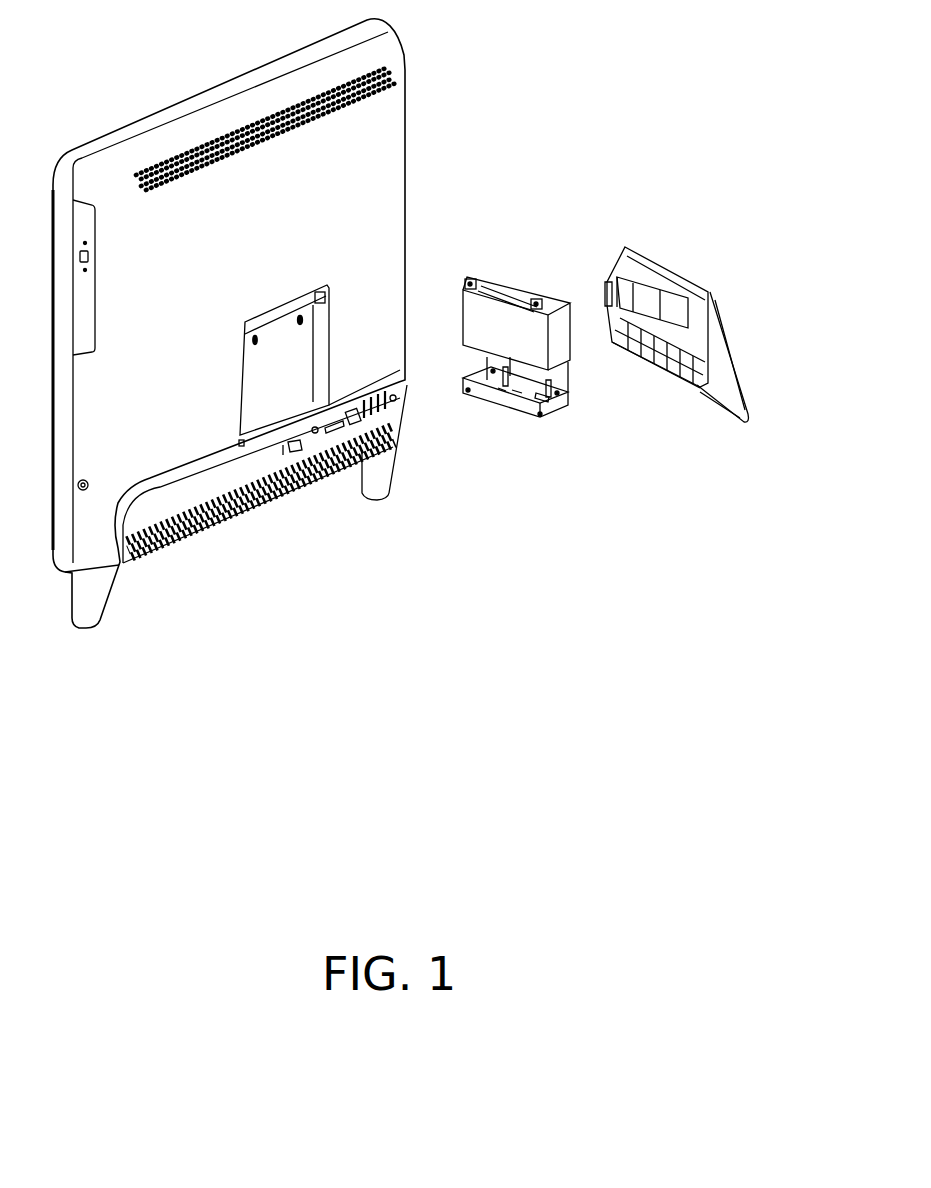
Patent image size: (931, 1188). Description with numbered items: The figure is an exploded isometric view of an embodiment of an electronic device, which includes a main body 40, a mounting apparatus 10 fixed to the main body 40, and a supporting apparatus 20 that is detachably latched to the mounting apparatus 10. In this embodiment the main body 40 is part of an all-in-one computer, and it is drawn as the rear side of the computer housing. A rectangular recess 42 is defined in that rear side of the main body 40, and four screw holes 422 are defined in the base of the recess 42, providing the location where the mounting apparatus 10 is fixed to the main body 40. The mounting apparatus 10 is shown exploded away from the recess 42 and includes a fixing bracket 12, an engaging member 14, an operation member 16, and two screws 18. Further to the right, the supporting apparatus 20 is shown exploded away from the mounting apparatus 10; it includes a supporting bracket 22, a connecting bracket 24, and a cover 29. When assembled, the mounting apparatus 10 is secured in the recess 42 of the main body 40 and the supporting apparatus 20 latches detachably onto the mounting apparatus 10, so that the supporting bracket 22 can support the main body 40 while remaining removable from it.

The mounting apparatus 10 is at (531, 309).
The fixing bracket 12 is at (523, 293).
The engaging member 14 is at (510, 392).
The operation member 16 is at (520, 391).
The screws 18 is at (543, 396).
The supporting apparatus 20 is at (698, 304).
The supporting bracket 22 is at (710, 337).
The connecting bracket 24 is at (662, 282).
The cover 29 is at (665, 368).
The main body 40 is at (267, 322).
The recess 42 is at (253, 422).
The screw holes 422 is at (300, 324).